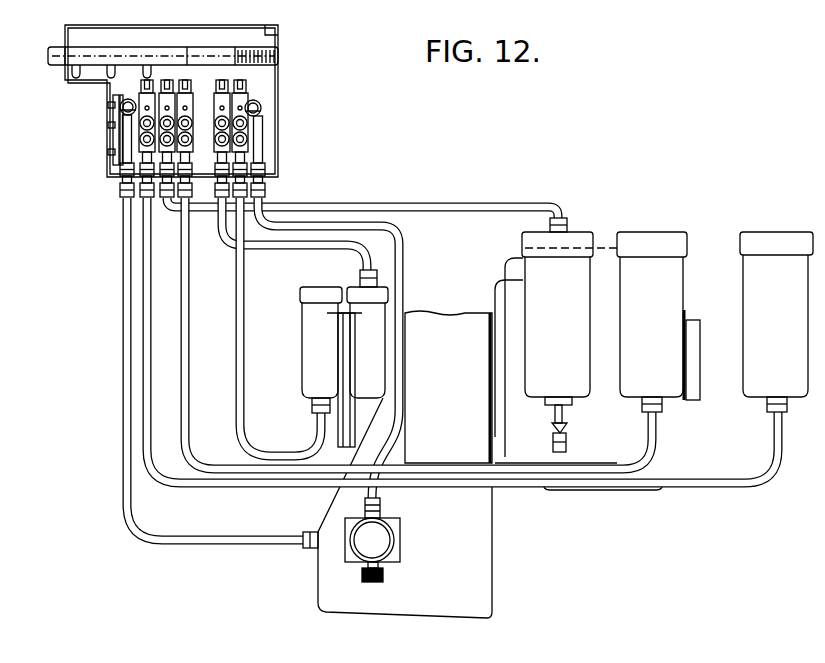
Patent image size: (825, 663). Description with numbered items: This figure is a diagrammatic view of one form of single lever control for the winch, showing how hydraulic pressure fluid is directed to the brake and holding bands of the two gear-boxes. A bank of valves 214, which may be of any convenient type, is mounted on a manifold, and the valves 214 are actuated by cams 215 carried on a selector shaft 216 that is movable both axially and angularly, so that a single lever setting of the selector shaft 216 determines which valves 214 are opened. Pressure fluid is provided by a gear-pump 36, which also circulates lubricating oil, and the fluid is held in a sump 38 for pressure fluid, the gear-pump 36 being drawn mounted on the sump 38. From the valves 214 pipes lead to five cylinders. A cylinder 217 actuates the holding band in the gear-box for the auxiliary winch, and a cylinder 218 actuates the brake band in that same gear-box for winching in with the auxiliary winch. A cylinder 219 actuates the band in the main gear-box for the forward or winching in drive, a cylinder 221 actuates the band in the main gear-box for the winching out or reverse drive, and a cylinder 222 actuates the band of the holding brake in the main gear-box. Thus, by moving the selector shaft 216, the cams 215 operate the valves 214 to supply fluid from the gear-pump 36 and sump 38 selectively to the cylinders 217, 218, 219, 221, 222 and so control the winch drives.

The valves 214 is at (136, 125).
The cams 215 is at (146, 78).
The selector shaft 216 is at (172, 56).
The cylinder 217 is at (312, 365).
The cylinder 218 is at (377, 382).
The cylinder 219 is at (537, 293).
The cylinder 221 is at (665, 296).
The cylinder 222 is at (756, 272).
The gear-pump 36 is at (400, 524).
The sump 38 is at (483, 532).